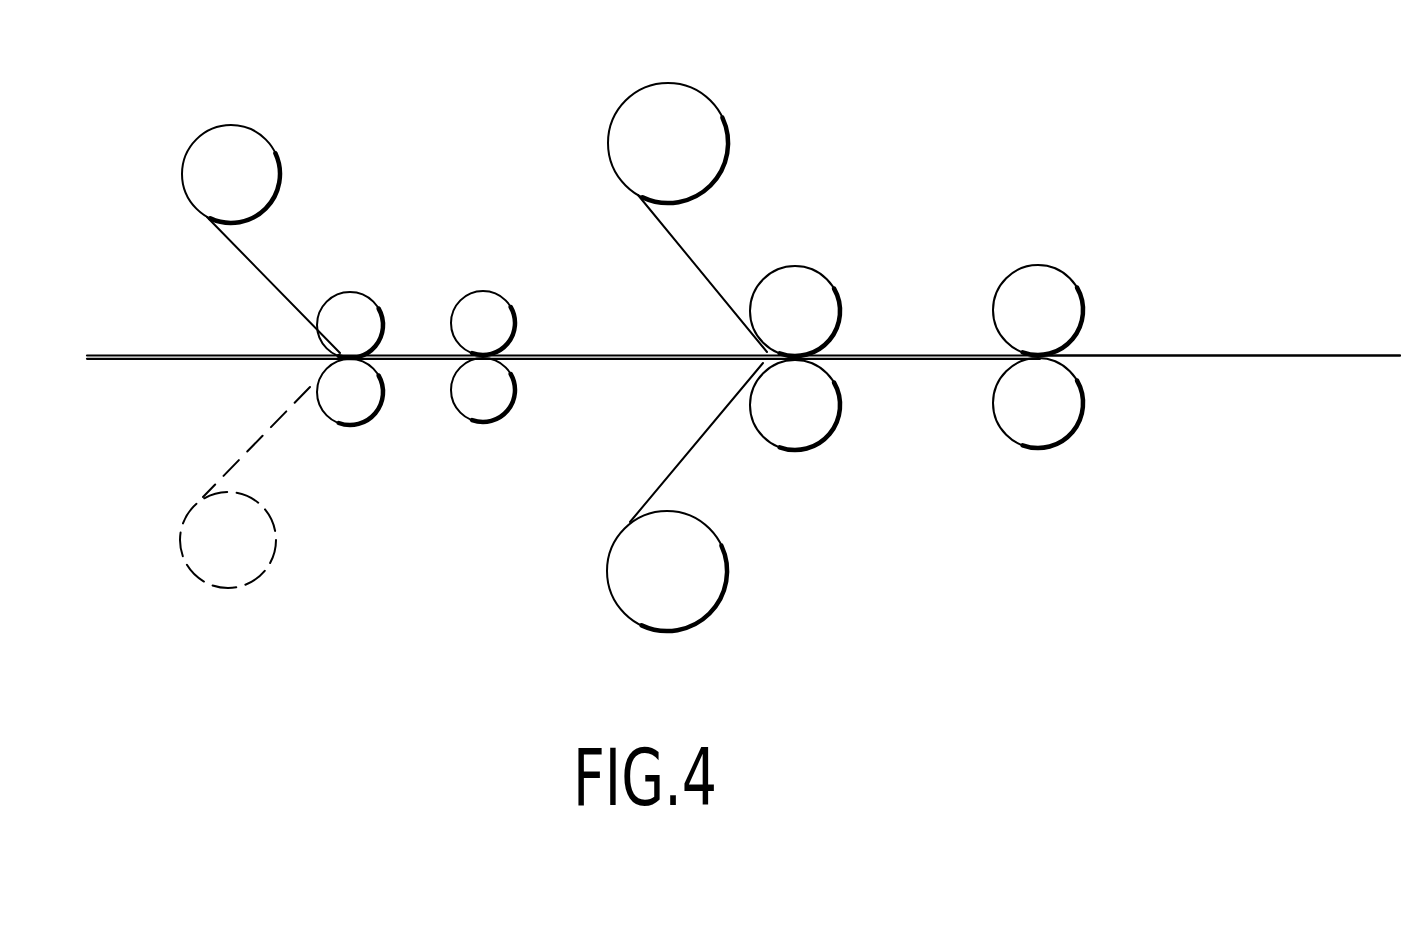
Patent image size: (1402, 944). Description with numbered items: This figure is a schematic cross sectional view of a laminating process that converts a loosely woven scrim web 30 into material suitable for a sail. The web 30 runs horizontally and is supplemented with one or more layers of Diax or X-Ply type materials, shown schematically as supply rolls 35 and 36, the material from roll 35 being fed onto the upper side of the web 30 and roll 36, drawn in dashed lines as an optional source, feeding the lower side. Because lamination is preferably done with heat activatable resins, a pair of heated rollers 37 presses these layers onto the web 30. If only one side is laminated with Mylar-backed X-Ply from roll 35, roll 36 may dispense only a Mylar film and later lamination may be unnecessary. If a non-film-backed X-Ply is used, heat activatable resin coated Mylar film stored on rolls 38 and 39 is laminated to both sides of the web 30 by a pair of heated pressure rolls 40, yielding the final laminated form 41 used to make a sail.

The web 30 is at (165, 358).
The supply roll 35 is at (263, 132).
The supply roll 36 is at (240, 587).
The heated rollers 37 is at (357, 292).
The roll 38 is at (712, 98).
The roll 39 is at (715, 607).
The heated pressure rolls 40 is at (818, 270).
The final laminated form 41 is at (1198, 355).